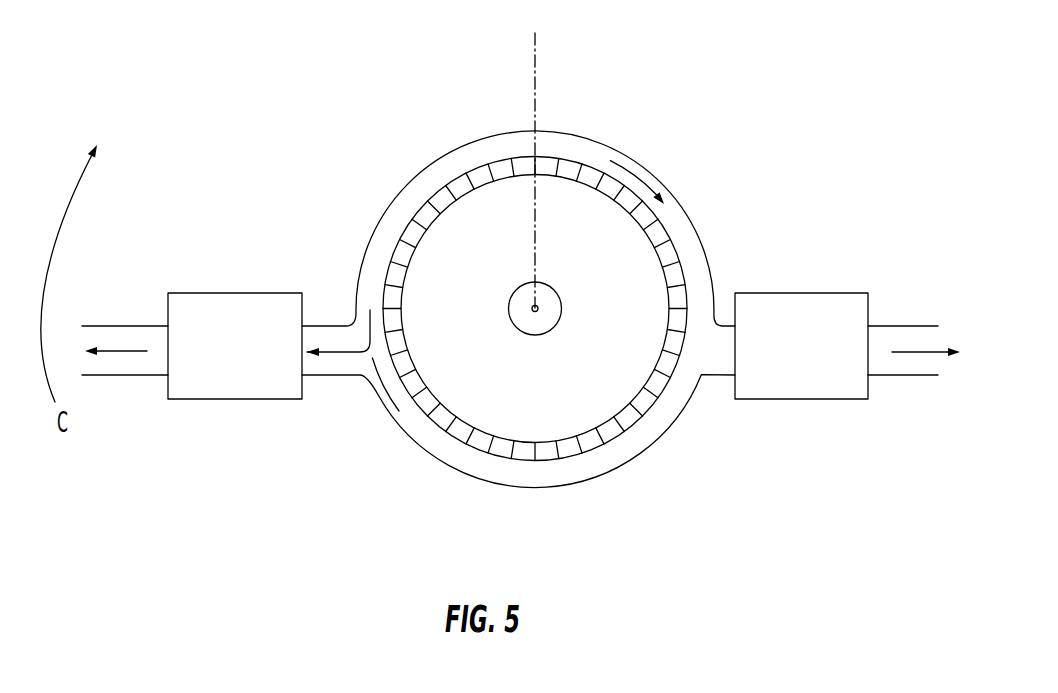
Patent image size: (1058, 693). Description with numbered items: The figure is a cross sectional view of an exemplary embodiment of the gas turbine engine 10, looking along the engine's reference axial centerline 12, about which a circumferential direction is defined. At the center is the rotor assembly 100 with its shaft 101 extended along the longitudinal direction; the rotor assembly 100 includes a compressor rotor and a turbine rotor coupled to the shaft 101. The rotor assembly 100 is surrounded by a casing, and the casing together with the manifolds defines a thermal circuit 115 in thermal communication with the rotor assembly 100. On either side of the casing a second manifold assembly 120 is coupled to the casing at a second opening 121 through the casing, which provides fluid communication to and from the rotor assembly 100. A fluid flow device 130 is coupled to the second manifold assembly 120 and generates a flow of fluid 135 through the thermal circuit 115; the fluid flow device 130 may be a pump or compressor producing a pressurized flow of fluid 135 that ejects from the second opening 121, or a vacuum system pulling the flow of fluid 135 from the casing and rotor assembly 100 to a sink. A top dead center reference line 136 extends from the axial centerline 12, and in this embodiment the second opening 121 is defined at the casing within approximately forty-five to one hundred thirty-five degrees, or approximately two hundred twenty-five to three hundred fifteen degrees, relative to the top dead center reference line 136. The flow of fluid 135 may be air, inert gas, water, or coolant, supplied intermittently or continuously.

The gas turbine engine 10 is at (354, 103).
The axial centerline 12 is at (535, 312).
The rotor assembly 100 is at (603, 242).
The shaft 101 is at (508, 308).
The thermal circuit 115 is at (397, 413).
The second manifold assembly 120 is at (323, 326).
The second opening 121 is at (349, 403).
The fluid flow device 130 is at (252, 361).
The flow of fluid 135 is at (120, 351).
The top dead center reference line 136 is at (536, 76).